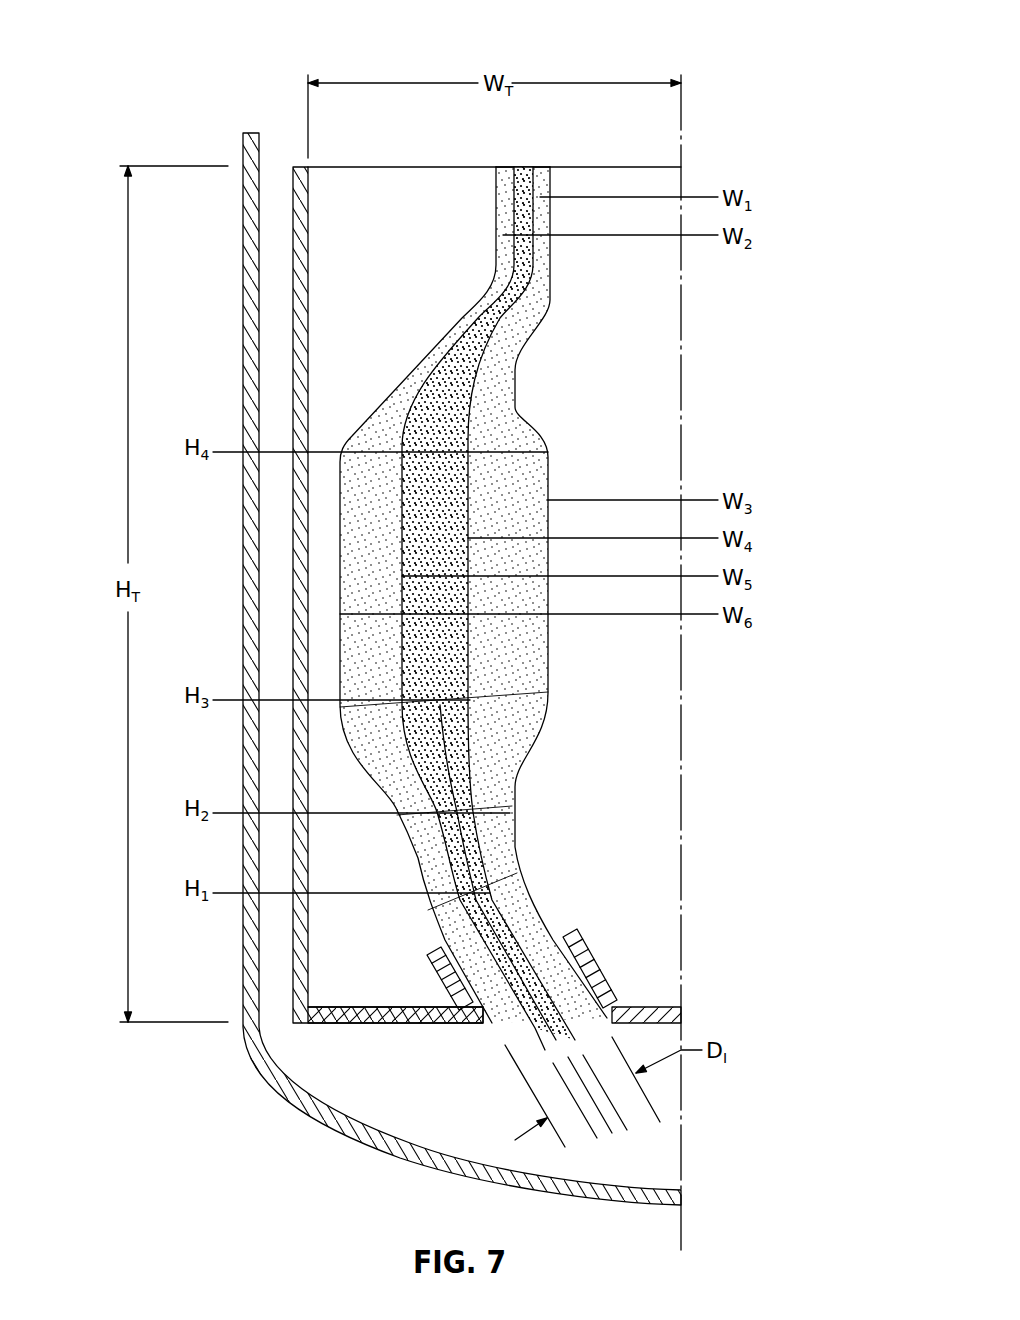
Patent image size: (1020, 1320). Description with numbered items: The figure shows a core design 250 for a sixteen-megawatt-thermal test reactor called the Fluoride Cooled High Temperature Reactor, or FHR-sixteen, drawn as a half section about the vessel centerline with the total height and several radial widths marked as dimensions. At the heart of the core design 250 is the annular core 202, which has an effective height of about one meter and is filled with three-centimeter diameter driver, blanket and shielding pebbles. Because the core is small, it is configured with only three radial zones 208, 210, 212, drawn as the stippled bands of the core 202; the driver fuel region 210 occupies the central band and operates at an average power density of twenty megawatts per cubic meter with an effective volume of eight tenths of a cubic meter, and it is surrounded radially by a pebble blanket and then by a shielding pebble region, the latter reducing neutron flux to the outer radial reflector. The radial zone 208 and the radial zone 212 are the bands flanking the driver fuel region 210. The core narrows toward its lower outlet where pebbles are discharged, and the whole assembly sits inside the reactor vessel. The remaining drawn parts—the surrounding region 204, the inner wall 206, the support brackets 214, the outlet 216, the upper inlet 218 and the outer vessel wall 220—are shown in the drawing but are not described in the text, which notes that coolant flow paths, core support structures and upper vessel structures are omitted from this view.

The core design 250 is at (135, 43).
The annular core 202 is at (407, 608).
The tundish interior region 204 is at (633, 318).
The tundish box wall 206 is at (328, 828).
The radial zone 208 is at (517, 496).
The driver fuel region 210 is at (440, 678).
The radial zone 212 is at (360, 516).
The support brackets 214 is at (654, 1007).
The outlet 216 is at (614, 1024).
The inlet 218 is at (540, 165).
The outer vessel wall 220 is at (243, 1033).